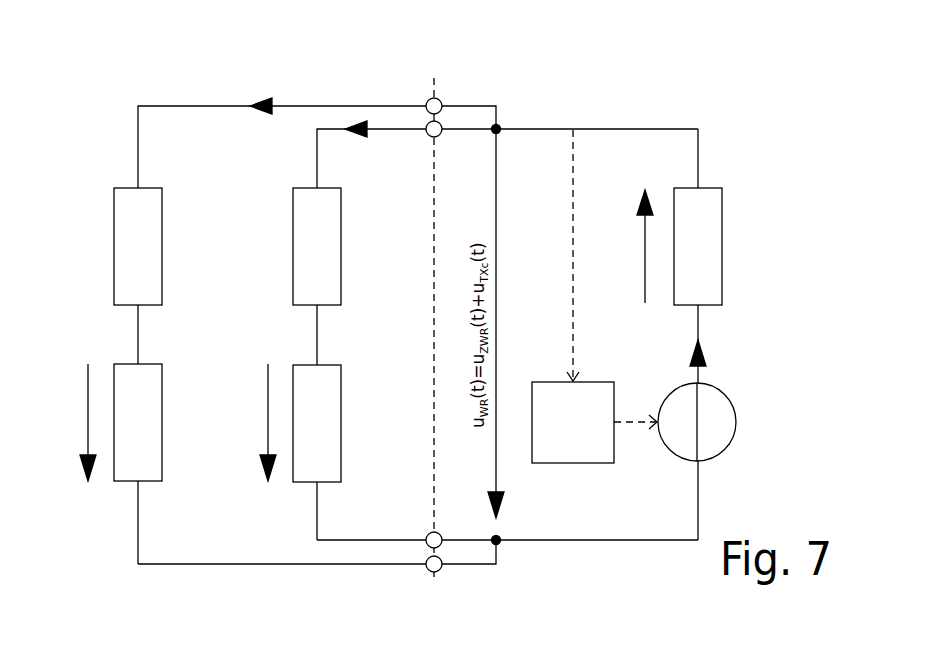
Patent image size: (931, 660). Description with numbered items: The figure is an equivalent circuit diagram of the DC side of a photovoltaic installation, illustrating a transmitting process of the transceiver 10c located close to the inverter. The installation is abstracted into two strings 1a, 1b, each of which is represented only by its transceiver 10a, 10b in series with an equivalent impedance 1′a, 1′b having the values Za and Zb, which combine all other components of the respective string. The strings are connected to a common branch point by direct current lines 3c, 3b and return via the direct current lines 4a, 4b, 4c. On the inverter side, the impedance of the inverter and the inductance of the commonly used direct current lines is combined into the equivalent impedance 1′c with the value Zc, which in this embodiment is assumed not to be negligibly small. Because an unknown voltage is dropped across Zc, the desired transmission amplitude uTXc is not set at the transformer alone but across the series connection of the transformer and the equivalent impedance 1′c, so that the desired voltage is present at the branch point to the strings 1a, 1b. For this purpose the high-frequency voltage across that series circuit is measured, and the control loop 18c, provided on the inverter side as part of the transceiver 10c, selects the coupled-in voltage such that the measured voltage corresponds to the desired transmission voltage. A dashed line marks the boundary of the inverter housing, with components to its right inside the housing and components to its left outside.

The direct current line 3c is at (182, 105).
The direct current line 3b is at (467, 128).
The equivalent impedance 1′a is at (114, 218).
The equivalent impedance 1′b is at (342, 212).
The equivalent impedance 1′c is at (722, 206).
The transceiver 10a is at (112, 378).
The transceiver 10b is at (345, 386).
The transceiver 10c is at (735, 413).
The control loop 18c is at (558, 463).
The string 1a is at (106, 540).
The string 1b is at (375, 508).
The direct current line 4a is at (166, 565).
The direct current line 4b is at (333, 541).
The direct current line 4c is at (558, 540).